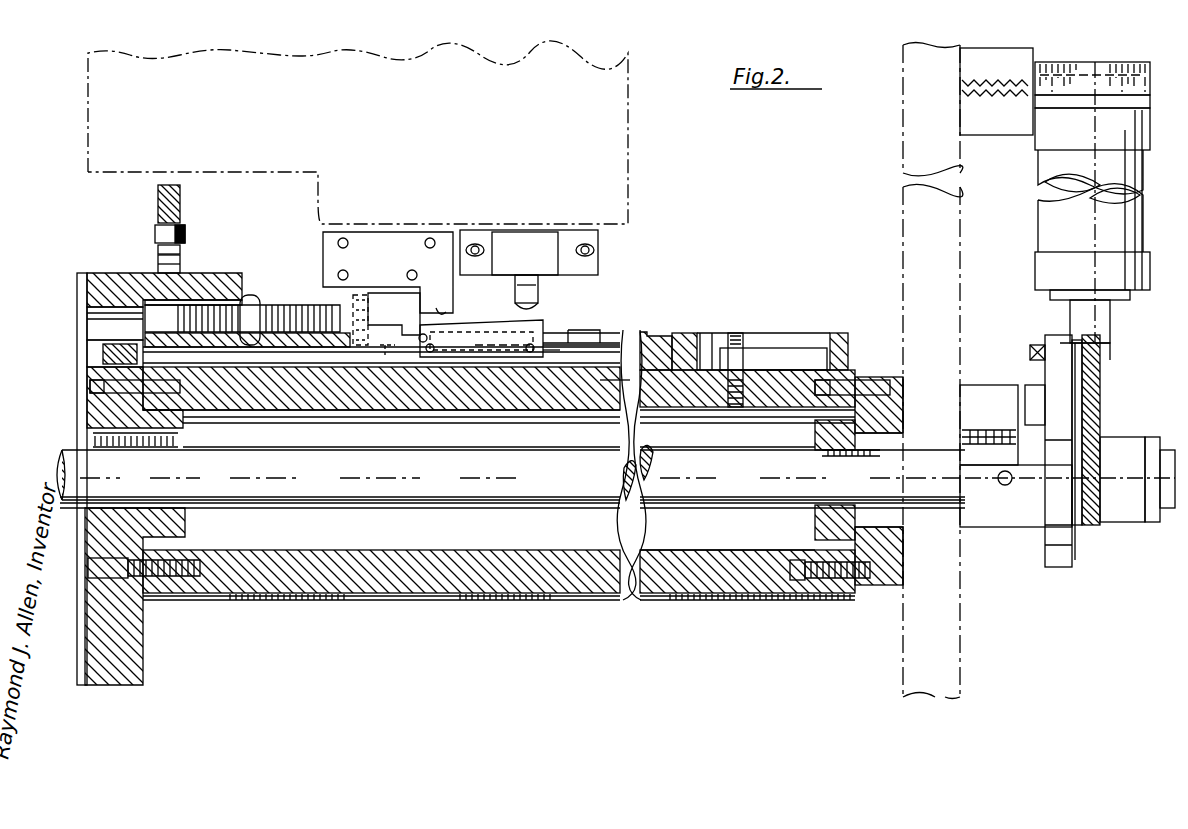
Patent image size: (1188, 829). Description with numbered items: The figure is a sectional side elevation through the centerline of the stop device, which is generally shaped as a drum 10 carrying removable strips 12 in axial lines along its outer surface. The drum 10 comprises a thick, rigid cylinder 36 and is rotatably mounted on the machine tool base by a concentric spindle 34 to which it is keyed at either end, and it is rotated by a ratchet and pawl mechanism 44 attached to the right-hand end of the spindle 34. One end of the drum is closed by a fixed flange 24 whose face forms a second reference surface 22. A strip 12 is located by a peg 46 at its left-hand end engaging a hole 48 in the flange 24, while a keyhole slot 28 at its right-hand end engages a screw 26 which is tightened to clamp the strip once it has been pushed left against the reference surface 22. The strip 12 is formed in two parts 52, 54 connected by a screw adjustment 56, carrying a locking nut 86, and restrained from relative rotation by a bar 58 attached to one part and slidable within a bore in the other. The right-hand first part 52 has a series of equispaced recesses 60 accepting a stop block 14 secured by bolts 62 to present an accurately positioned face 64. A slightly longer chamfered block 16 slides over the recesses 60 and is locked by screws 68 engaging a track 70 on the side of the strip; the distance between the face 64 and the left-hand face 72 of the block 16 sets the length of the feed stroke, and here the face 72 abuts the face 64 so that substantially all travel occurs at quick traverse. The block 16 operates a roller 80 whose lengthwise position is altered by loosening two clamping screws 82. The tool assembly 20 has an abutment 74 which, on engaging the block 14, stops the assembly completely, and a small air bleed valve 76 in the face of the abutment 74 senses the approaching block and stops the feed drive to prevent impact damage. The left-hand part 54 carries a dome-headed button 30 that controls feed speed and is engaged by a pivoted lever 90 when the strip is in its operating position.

The drum 10 is at (672, 363).
The removable strip 12 is at (593, 331).
The stop block 14 is at (394, 324).
The chamfered block 16 is at (495, 338).
The tool assembly 20 is at (630, 152).
The second reference surface 22 is at (149, 272).
The fixed flange 24 is at (100, 272).
The screw 26 is at (737, 337).
The keyhole slot 28 is at (800, 358).
The dome-headed bolt or button 30 is at (180, 266).
The spindle 34 is at (511, 479).
The rigid cylinder 36 is at (613, 387).
The ratchet and pawl mechanism 44 is at (1133, 326).
The peg 46 is at (132, 352).
The hole 48 is at (137, 333).
The first part of strip 52 is at (565, 332).
The left-hand part of strip 54 is at (243, 271).
The screw adjustment 56 is at (297, 303).
The bar 58 is at (288, 353).
The recesses 60 is at (650, 388).
The bolts 62 is at (360, 340).
The face 64 is at (440, 307).
The screws 68 is at (530, 352).
The track 70 is at (600, 432).
The left-hand face 72 is at (422, 342).
The abutment 74 is at (388, 272).
The air bleed valve 76 is at (446, 310).
The roller 80 is at (529, 269).
The clamping screws 82 is at (586, 244).
The locking nut 86 is at (253, 295).
The pivoted lever 90 is at (178, 206).